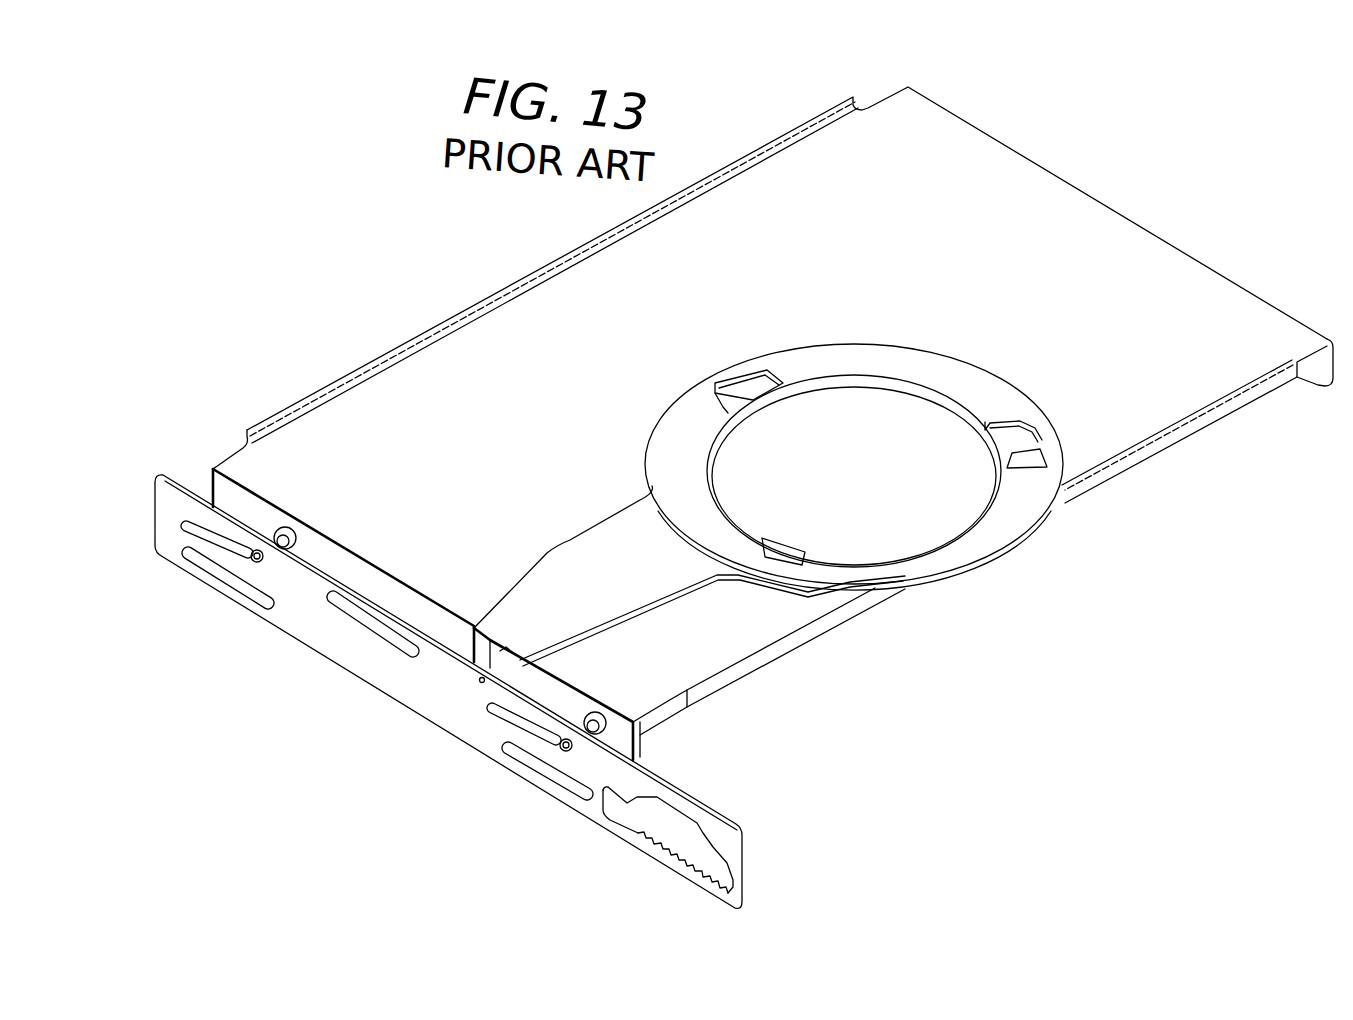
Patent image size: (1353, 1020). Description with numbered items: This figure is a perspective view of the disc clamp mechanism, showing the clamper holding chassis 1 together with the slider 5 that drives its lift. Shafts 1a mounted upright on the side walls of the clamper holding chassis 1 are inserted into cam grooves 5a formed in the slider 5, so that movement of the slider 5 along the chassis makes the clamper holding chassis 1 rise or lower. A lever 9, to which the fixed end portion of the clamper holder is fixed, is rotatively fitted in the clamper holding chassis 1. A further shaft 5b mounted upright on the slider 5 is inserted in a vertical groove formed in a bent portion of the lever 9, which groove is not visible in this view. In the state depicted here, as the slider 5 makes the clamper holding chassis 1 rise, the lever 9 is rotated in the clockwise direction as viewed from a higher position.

The clamper holding chassis 1 is at (772, 655).
The shaft 1a is at (250, 560).
The slider 5 is at (375, 665).
The cam groove 5a is at (187, 537).
The shaft 5b is at (481, 683).
The lever 9 is at (612, 538).